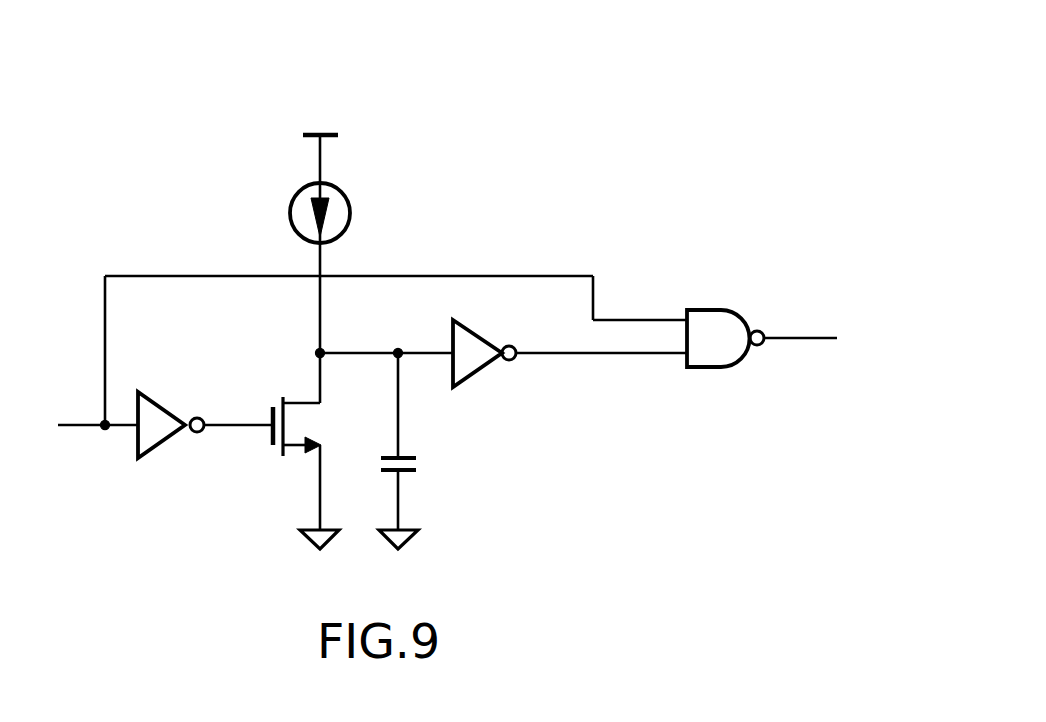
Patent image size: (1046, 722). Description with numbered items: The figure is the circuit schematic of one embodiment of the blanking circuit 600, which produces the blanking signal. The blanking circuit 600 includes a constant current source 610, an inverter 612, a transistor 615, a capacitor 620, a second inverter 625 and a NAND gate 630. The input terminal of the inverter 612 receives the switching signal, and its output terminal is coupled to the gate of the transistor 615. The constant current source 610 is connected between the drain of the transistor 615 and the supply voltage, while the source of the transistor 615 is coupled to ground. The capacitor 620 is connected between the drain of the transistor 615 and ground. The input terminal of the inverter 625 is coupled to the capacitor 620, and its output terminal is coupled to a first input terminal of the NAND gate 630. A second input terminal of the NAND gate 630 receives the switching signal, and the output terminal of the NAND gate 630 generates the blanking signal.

The blanking circuit 600 is at (829, 37).
The constant current source 610 is at (345, 195).
The inverter 612 is at (154, 394).
The transistor 615 is at (291, 455).
The capacitor 620 is at (418, 463).
The inverter 625 is at (470, 376).
The NAND gate 630 is at (710, 306).